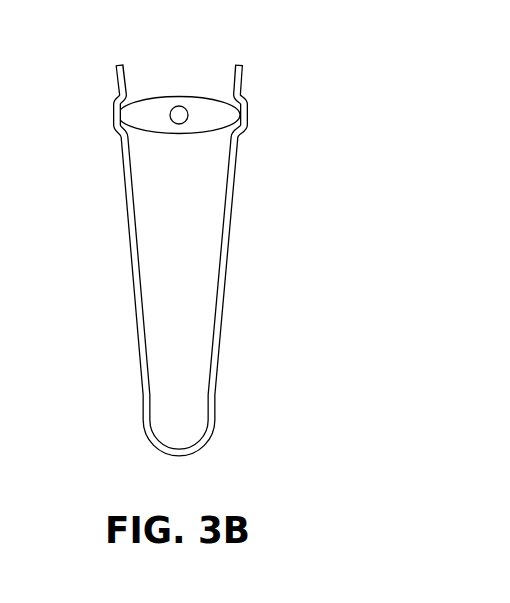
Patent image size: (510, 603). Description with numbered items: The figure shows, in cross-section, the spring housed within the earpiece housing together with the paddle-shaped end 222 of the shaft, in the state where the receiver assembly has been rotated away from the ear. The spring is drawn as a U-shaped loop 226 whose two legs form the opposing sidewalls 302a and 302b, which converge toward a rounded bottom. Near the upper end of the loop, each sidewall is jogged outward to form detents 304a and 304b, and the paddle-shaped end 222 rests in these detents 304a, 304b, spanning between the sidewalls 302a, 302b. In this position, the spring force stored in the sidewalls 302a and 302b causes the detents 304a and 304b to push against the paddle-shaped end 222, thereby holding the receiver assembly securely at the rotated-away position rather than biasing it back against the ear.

The paddle-shaped end 222 is at (178, 96).
The U-shaped wire loop 226 is at (230, 243).
The sidewall 302a is at (138, 337).
The sidewall 302b is at (219, 352).
The detent 304a is at (113, 113).
The detent 304b is at (248, 118).